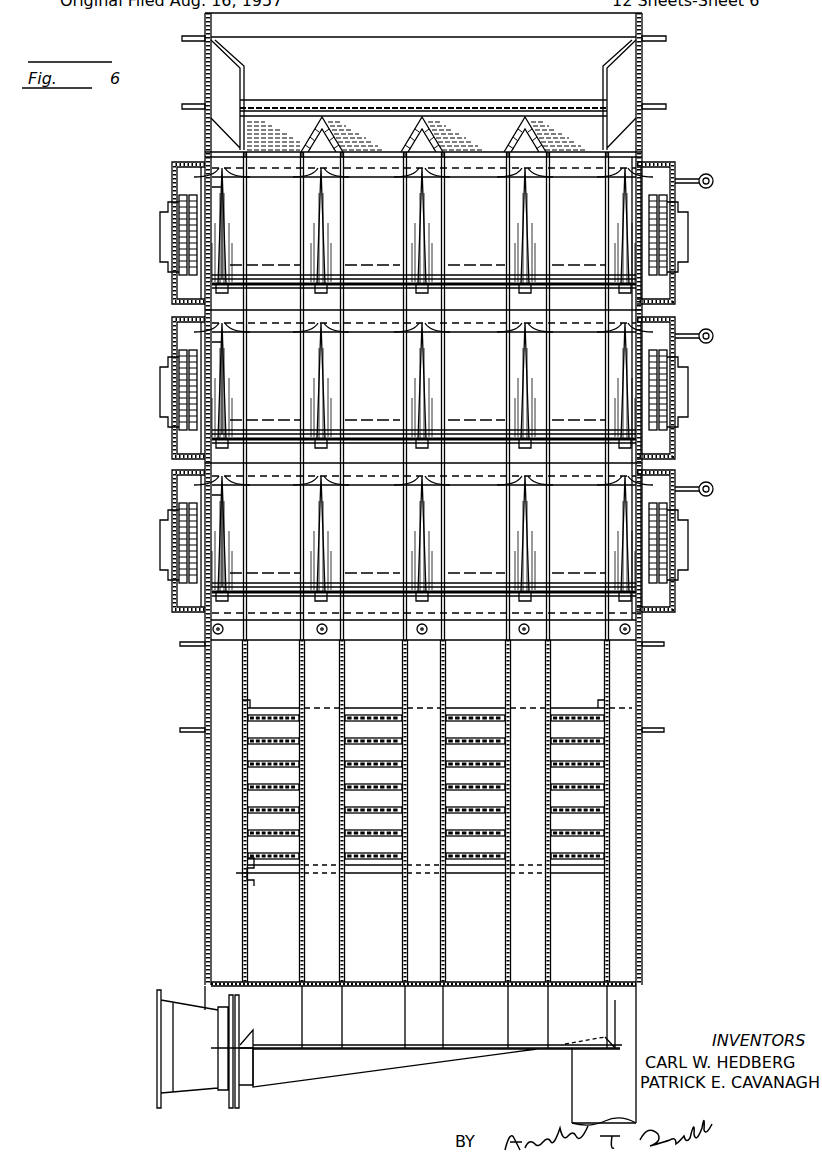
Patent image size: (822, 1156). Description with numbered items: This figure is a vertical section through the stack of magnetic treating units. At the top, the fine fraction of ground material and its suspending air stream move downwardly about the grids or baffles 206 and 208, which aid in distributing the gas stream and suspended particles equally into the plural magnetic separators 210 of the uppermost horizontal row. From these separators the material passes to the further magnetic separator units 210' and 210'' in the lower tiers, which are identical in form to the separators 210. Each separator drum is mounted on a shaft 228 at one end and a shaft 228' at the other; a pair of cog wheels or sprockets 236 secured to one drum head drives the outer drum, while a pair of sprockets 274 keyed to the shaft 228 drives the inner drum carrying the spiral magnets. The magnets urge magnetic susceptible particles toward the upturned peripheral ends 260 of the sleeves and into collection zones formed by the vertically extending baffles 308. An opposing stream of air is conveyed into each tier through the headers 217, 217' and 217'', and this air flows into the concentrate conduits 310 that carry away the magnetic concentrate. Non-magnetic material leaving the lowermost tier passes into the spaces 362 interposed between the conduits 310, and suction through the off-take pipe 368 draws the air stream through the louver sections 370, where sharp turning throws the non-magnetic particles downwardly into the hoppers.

The grid or baffle 206 is at (418, 116).
The grid or baffle 208 is at (307, 100).
The magnetic separator 210 is at (423, 239).
The magnetic separator unit 210' is at (423, 393).
The magnetic separator unit 210'' is at (424, 544).
The header 217 is at (714, 172).
The header 217' is at (716, 327).
The header 217'' is at (719, 469).
The shaft 228 is at (695, 389).
The shaft 228' is at (150, 389).
The cog wheels or sprockets 236 is at (188, 276).
The upturned peripheral ends 260 is at (530, 289).
The cog wheels or sprockets 274 is at (657, 281).
The vertically extending baffles 308 is at (298, 926).
The concentrate conduits 310 is at (211, 666).
The spaces 362 is at (287, 677).
The off-take pipe 368 is at (196, 1092).
The louver sections 370 is at (244, 806).